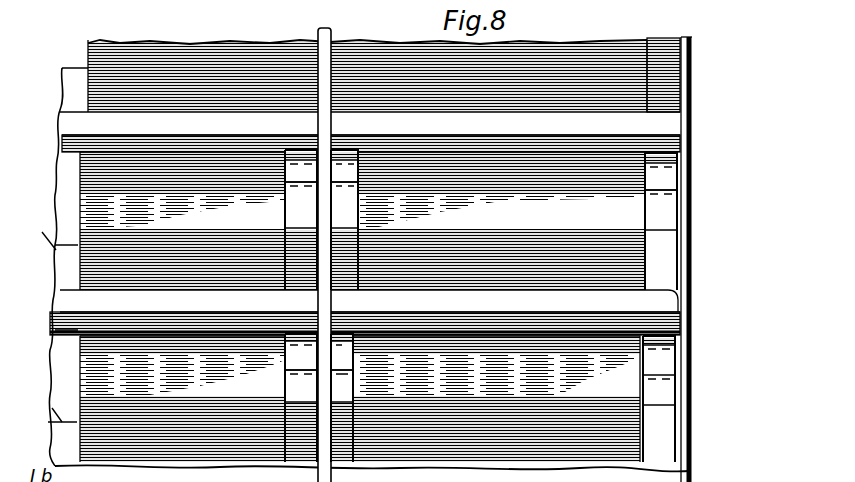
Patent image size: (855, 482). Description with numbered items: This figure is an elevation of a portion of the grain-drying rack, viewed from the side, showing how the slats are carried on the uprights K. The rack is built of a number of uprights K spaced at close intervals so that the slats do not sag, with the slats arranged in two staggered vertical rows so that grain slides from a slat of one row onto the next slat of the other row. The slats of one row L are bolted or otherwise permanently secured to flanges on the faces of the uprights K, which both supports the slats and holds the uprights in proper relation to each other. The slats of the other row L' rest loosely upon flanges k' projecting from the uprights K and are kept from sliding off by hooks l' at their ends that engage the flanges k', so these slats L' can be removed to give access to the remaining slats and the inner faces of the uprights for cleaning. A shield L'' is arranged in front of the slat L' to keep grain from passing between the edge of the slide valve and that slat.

The slats of the other row L' is at (372, 255).
The shield L'' is at (365, 235).
The uprights K is at (320, 310).
The hooks l' is at (473, 306).
The flanges k' is at (481, 293).
The slats of one row L is at (57, 267).